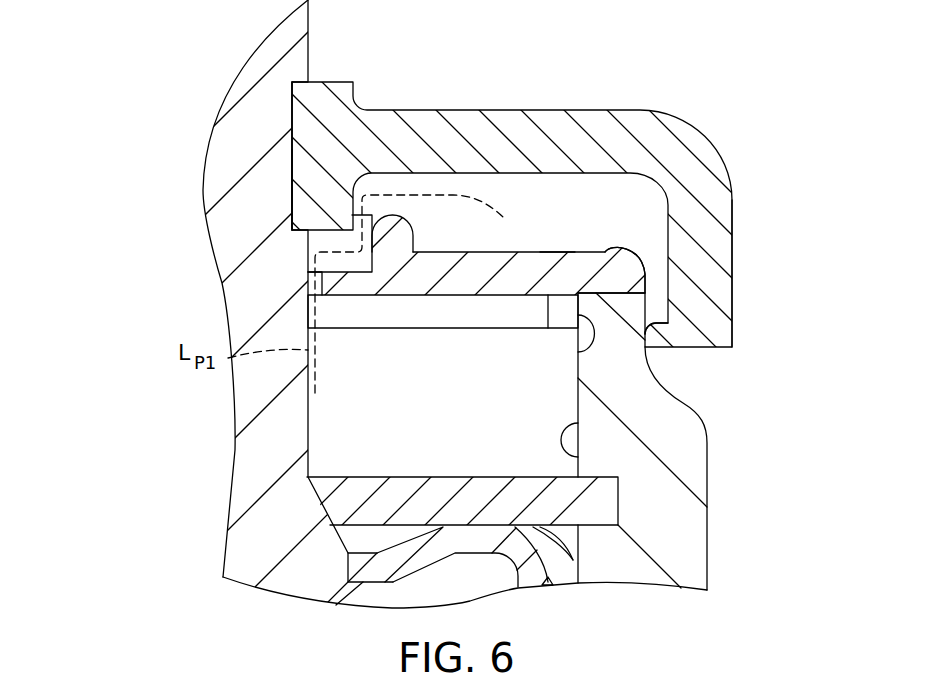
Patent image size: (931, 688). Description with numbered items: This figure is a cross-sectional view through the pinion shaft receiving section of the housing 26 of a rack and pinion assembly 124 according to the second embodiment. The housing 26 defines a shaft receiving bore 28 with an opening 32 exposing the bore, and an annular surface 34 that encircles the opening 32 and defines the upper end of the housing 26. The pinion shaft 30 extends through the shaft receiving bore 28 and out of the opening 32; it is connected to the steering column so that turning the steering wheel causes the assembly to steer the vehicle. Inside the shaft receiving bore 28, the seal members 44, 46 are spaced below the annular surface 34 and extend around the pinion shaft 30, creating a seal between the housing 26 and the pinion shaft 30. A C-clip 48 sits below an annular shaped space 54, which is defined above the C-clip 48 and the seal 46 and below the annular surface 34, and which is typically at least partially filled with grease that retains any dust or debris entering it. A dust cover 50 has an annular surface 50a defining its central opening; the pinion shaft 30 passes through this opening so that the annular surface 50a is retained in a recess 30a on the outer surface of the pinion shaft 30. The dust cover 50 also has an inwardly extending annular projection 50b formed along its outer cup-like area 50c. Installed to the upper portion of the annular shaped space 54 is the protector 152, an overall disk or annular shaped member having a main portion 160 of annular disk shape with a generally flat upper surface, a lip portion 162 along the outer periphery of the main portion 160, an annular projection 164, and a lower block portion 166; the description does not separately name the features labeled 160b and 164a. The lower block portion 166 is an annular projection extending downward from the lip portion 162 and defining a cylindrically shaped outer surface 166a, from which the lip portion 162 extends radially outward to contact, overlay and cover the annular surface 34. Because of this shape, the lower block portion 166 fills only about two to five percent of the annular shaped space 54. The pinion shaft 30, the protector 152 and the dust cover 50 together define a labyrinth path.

The pinion shaft 30 is at (288, 28).
The recess 30a is at (294, 112).
The dust cover 50 is at (535, 143).
The annular surface 50a is at (292, 188).
The inwardly extending annular projection 50b is at (655, 338).
The outer cup-like area 50c is at (700, 315).
The rack and pinion assembly 124 is at (636, 60).
The protector 152 is at (509, 299).
The main portion 160 is at (420, 277).
The seal body end 160b is at (322, 297).
The annular projection 164 is at (387, 219).
The seal lip leg 164a is at (355, 234).
The lower block portion 166 is at (560, 318).
The cylindrically shaped outer surface 166a is at (578, 352).
The lip portion 162 is at (628, 268).
The opening 32 is at (555, 252).
The annular surface 34 is at (610, 290).
The annular shaped space 54 is at (482, 432).
The shaft receiving bore 28 is at (578, 456).
The housing 26 is at (670, 433).
The C-clip 48 is at (592, 506).
The seal member 46 is at (532, 577).
The seal member 44 is at (563, 568).